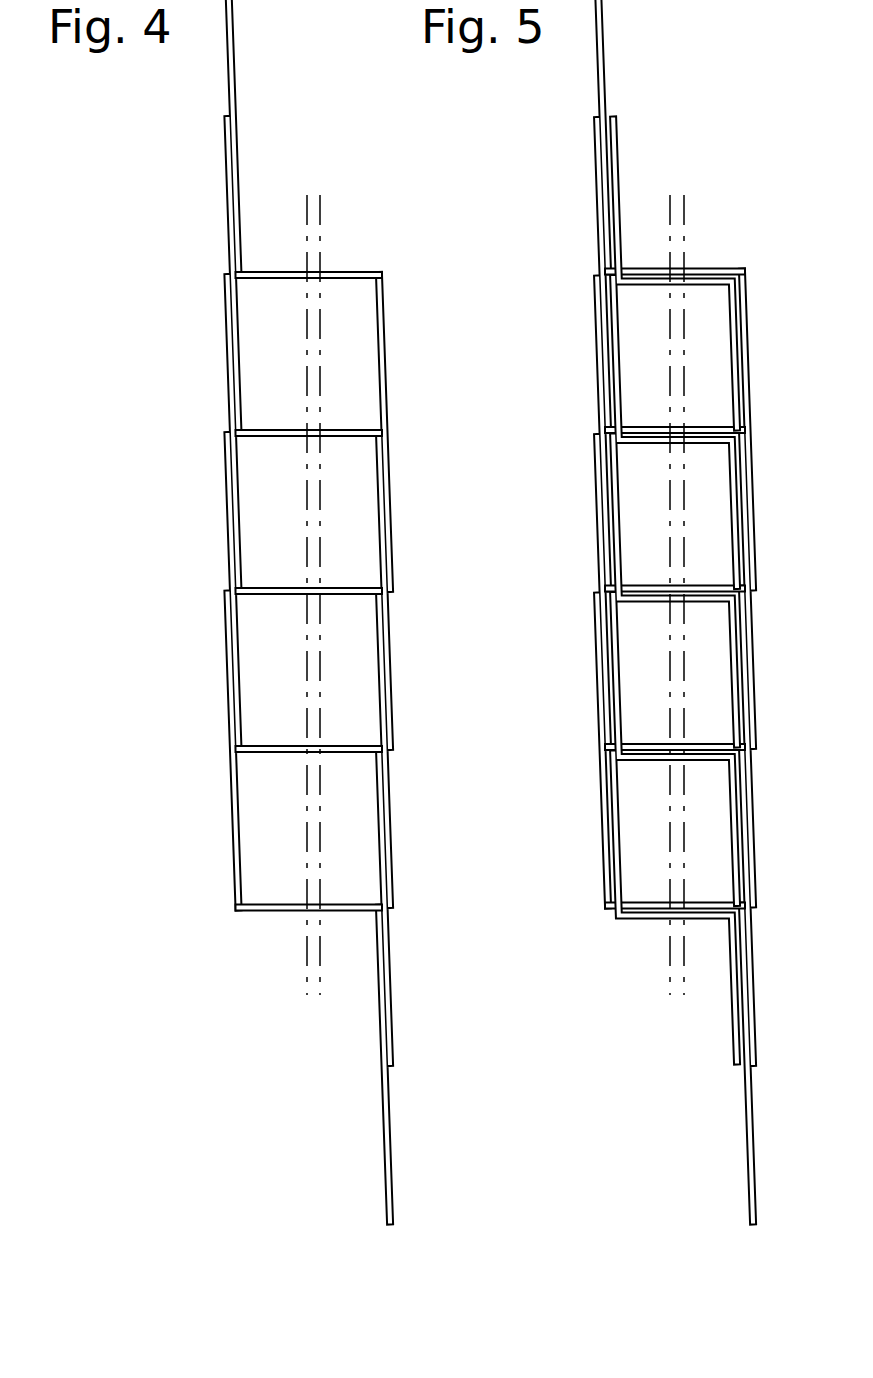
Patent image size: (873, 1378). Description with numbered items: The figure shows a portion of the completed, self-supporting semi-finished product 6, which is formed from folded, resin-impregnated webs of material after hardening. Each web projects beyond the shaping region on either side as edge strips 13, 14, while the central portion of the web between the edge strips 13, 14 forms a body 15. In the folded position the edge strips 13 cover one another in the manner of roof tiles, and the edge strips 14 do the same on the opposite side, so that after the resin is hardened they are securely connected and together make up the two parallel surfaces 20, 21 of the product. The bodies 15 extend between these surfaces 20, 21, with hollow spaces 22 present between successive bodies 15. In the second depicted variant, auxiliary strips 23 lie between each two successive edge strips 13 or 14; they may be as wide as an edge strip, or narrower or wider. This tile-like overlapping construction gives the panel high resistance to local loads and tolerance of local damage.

In FIG. 4, the semi-finished product 6 is at (290, 196).
In FIG. 5, the semi-finished product 6 is at (695, 188).
In FIG. 4, the edge strip 13 is at (385, 352).
In FIG. 5, the edge strip 13 is at (749, 352).
In FIG. 4, the edge strip 14 is at (232, 96).
In FIG. 5, the edge strip 14 is at (601, 97).
In FIG. 4, the body 15 is at (350, 273).
In FIG. 5, the body 15 is at (714, 269).
In FIG. 4, the surface 20 is at (398, 474).
In FIG. 5, the surface 20 is at (762, 682).
In FIG. 4, the surface 21 is at (232, 525).
In FIG. 5, the surface 21 is at (606, 585).
In FIG. 4, the hollow space 22 is at (270, 303).
In FIG. 5, the hollow space 22 is at (645, 303).
In FIG. 5, the auxiliary strip 23 is at (612, 207).